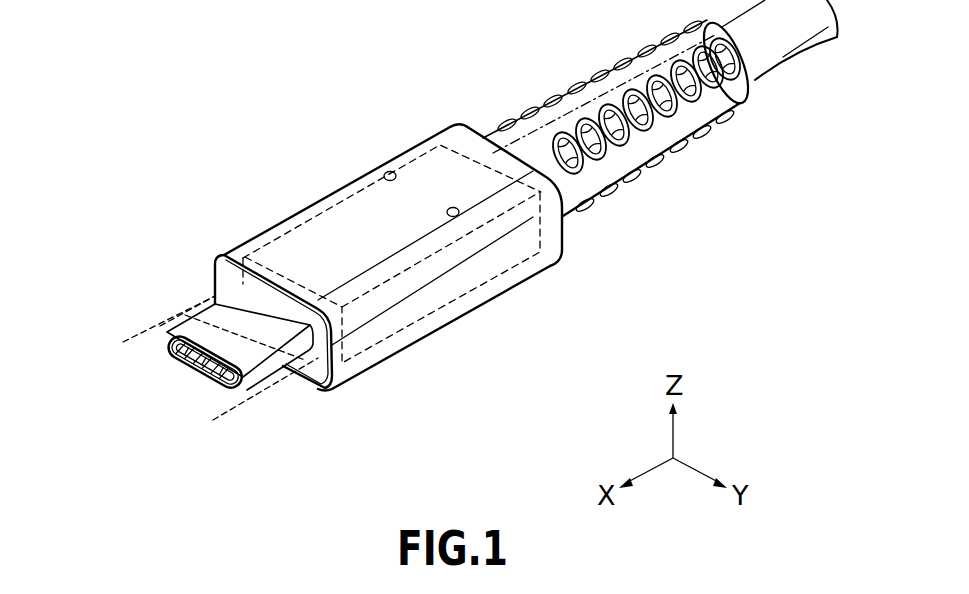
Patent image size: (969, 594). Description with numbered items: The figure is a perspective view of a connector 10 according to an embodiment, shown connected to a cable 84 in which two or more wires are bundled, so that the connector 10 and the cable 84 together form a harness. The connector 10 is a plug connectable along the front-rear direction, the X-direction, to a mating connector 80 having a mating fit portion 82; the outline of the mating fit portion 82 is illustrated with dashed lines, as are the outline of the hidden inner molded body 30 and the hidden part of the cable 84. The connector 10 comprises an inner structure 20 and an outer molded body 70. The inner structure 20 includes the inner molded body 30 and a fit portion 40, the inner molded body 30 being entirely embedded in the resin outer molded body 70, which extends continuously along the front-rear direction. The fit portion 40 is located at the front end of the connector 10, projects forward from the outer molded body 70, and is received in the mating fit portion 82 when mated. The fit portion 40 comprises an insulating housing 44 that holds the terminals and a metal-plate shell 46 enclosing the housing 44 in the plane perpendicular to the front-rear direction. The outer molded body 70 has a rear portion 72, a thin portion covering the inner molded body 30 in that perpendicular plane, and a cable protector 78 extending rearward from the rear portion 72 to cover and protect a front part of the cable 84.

The connector 10 is at (213, 248).
The inner structure 20 is at (376, 317).
The inner molded body 30 is at (552, 242).
The fit portion 40 is at (288, 388).
The housing 44 is at (168, 348).
The shell 46 is at (190, 330).
The outer molded body 70 is at (620, 116).
The rear portion 72 is at (341, 214).
The cable protector 78 is at (508, 132).
The mating connector 80 is at (128, 324).
The mating fit portion 82 is at (165, 330).
The cable 84 is at (838, 54).